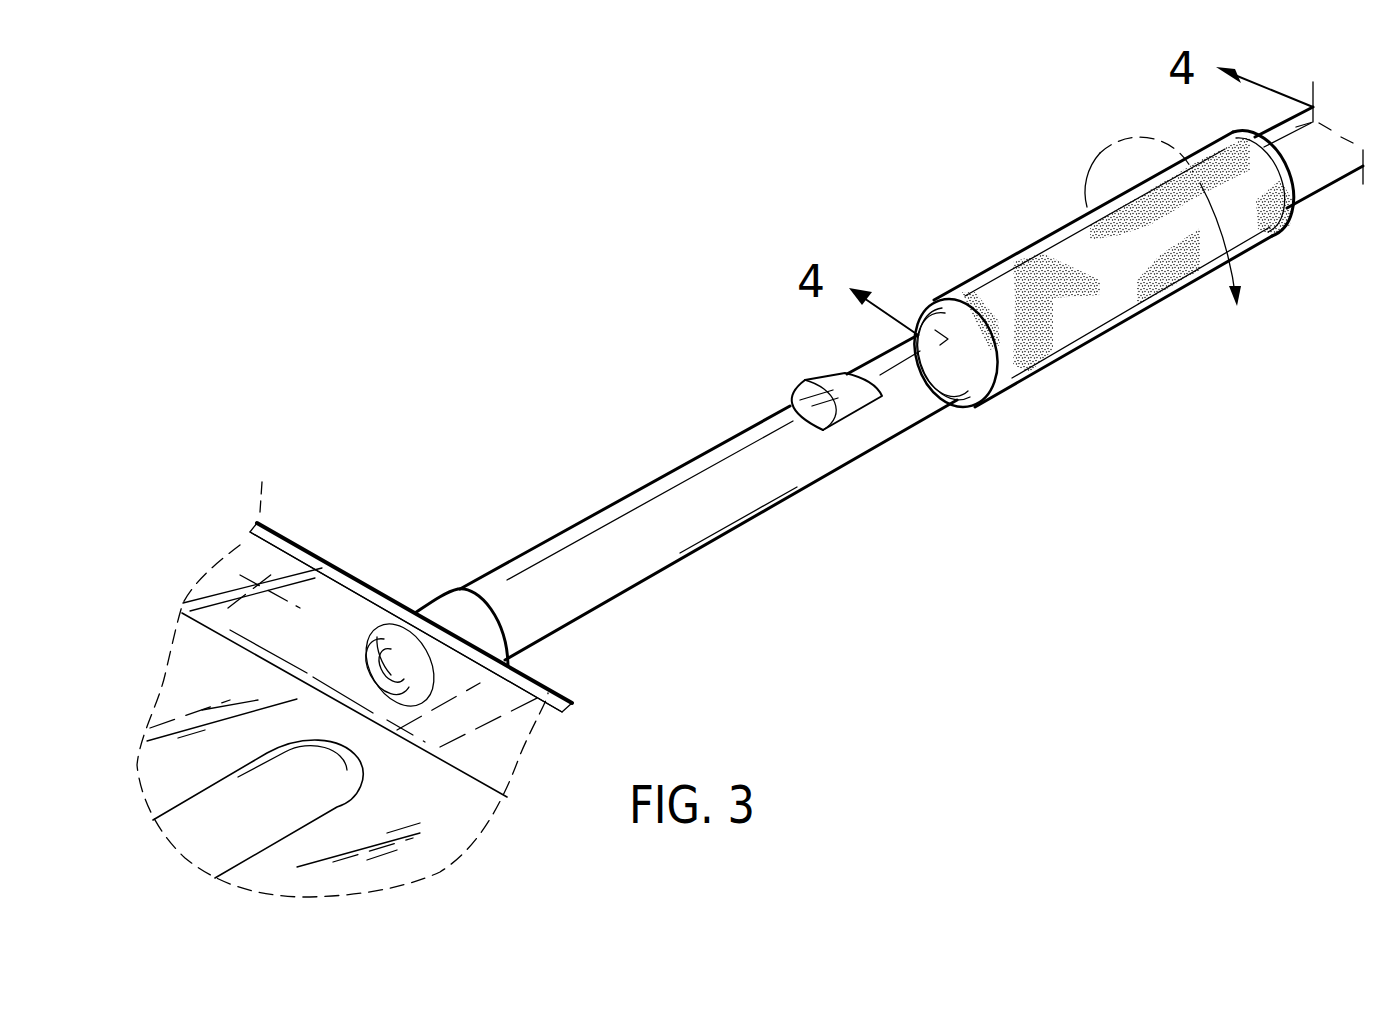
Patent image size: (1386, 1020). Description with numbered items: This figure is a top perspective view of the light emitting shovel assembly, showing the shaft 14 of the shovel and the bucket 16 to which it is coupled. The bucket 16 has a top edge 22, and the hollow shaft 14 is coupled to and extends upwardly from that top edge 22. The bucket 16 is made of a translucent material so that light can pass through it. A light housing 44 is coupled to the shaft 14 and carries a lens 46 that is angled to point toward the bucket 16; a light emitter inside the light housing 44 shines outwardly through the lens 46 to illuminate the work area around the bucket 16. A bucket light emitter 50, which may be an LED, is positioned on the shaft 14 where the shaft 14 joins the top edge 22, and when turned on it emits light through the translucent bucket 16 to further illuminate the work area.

The shaft 14 is at (661, 496).
The bucket 16 is at (299, 546).
The top edge 22 is at (361, 582).
The light housing 44 is at (833, 377).
The lens 46 is at (800, 400).
The bucket light emitter 50 is at (403, 675).